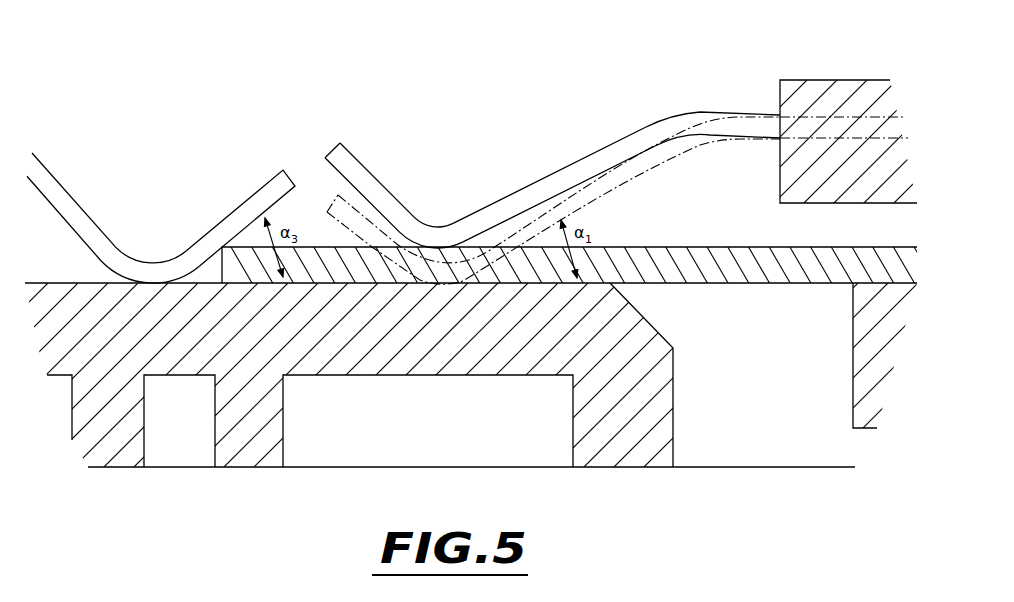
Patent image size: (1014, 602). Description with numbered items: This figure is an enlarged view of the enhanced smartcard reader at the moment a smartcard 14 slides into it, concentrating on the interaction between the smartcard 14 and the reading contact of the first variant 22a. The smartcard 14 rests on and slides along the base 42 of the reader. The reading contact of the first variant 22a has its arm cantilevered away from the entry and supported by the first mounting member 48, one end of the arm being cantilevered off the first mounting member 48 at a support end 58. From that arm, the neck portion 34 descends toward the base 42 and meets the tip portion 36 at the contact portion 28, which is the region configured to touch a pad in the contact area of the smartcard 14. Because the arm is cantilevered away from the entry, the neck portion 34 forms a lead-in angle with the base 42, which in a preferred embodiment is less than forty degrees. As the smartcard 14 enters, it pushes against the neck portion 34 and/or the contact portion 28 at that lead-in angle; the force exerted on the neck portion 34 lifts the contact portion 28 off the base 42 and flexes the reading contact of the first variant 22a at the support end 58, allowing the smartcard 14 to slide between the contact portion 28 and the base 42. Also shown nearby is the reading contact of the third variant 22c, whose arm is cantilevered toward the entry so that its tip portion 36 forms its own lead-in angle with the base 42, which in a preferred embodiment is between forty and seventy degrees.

The smartcard 14 is at (688, 250).
The reading contact of the first variant 22a is at (595, 172).
The reading contact of the third variant 22c is at (161, 218).
The contact portion 28 is at (616, 164).
The neck portion 34 is at (520, 190).
The tip portion 36 is at (240, 203).
The base 42 is at (623, 445).
The first mounting member 48 is at (826, 78).
The support end 58 is at (777, 112).